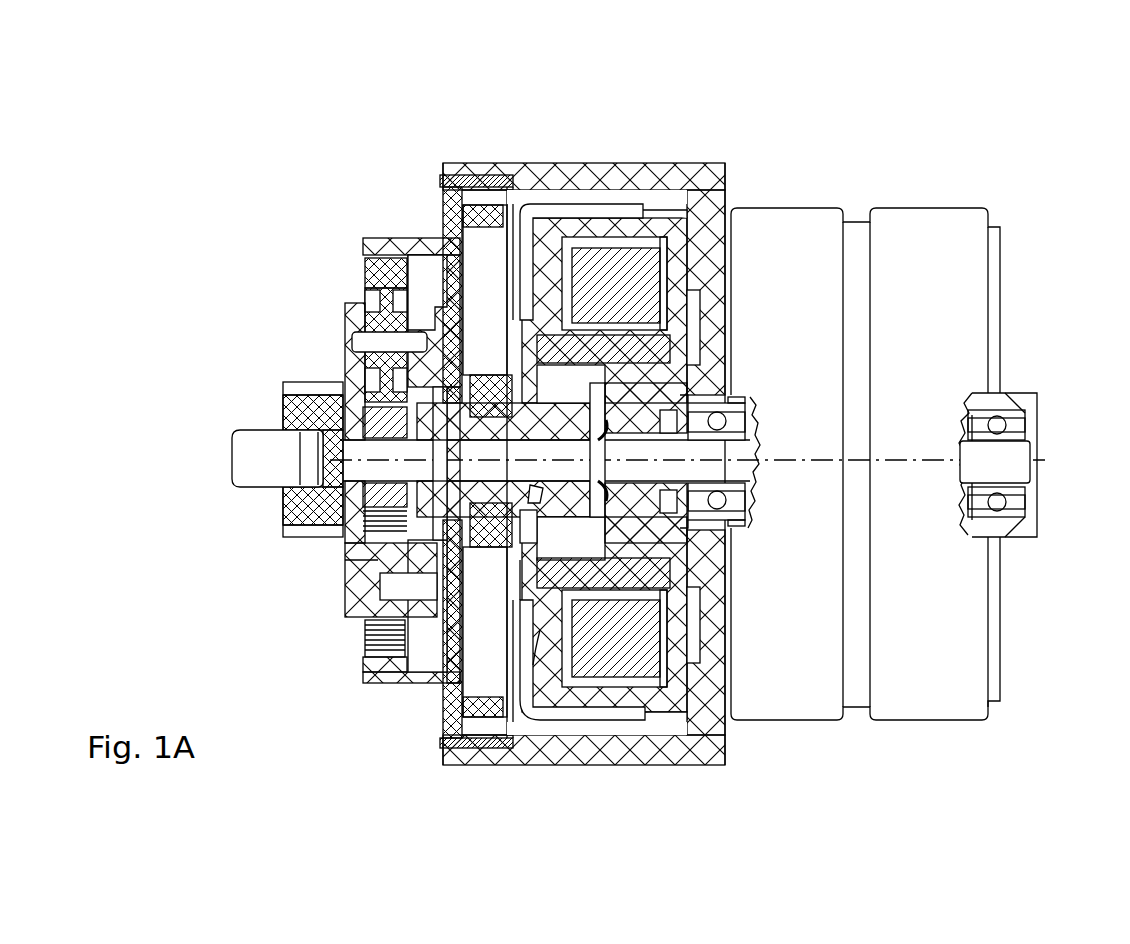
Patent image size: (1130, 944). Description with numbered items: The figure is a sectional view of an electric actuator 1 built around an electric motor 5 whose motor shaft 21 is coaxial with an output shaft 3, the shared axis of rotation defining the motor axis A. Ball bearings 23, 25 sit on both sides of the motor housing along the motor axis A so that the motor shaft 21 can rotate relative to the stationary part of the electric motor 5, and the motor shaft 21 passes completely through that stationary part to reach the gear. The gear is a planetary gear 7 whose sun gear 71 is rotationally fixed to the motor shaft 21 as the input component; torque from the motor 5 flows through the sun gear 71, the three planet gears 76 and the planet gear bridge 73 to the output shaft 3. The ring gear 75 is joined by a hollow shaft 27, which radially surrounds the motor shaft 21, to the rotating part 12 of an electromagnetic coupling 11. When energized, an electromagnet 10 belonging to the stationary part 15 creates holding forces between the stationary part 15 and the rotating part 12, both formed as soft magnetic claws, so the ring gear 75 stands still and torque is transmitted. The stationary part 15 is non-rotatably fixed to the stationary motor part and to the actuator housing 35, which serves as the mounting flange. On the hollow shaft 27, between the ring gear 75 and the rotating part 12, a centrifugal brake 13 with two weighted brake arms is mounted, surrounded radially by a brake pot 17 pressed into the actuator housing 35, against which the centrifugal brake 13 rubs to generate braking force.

The actuator 1 is at (260, 219).
The output shaft 3 is at (283, 410).
The electric motor 5 is at (892, 248).
The planetary gear 7 is at (365, 235).
The electromagnet 10 is at (617, 646).
The electromagnetic coupling 11 is at (607, 194).
The rotating part 12 is at (553, 200).
The centrifugal brake 13 is at (493, 197).
The stationary part 15 is at (665, 222).
The brake pot 17 is at (450, 173).
The motor shaft 21 is at (737, 470).
The ball bearing 23 is at (735, 392).
The ball bearing 25 is at (1012, 525).
The hollow shaft 27 is at (565, 555).
The actuator housing 35 is at (715, 598).
The sun gear 71 is at (355, 505).
The planet gear bridge 73 is at (345, 345).
The ring gear 75 is at (388, 683).
The planet gear 76 is at (365, 271).
The motor axis A is at (1040, 460).